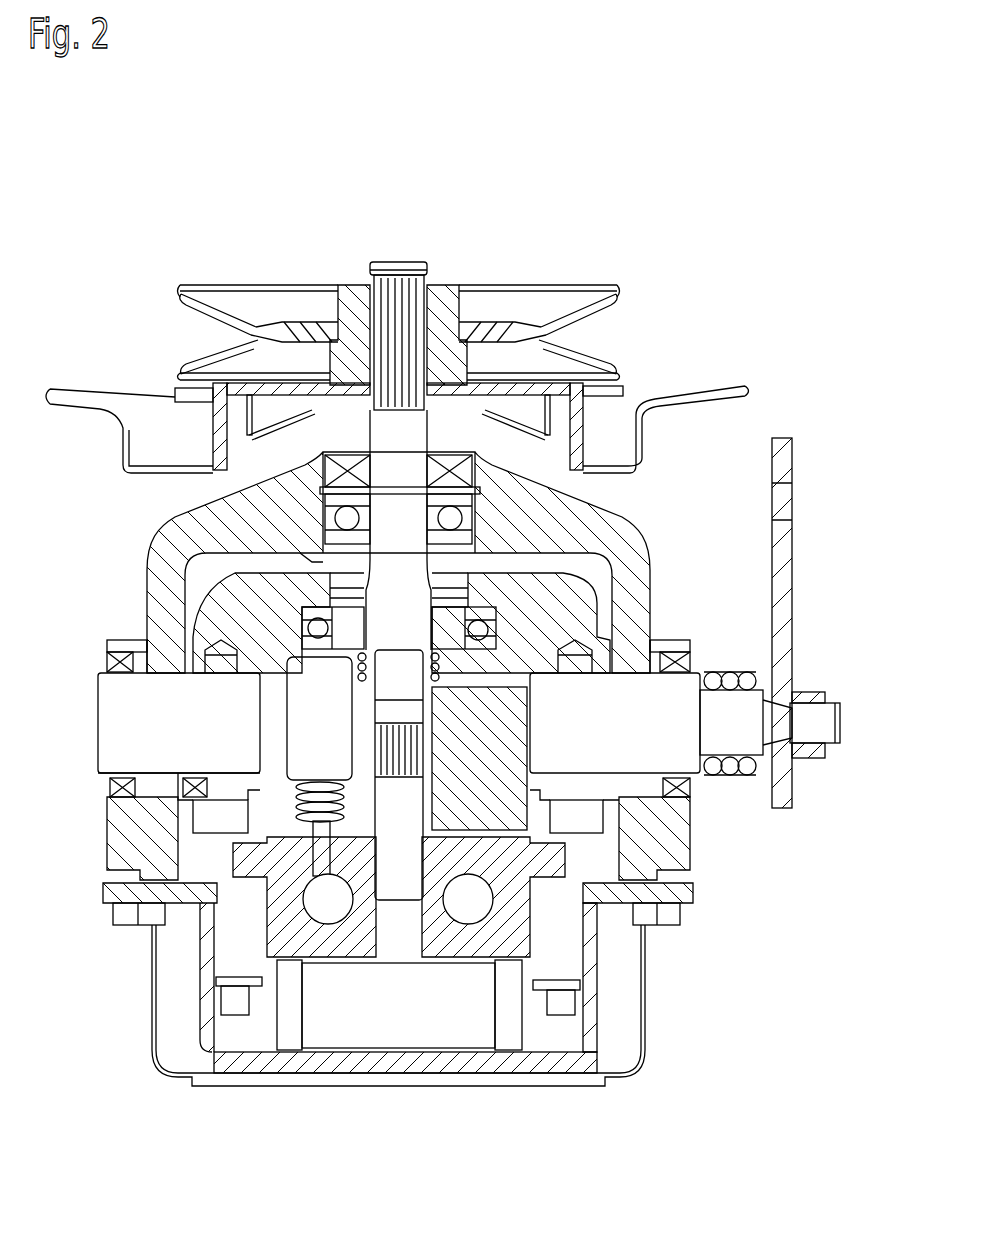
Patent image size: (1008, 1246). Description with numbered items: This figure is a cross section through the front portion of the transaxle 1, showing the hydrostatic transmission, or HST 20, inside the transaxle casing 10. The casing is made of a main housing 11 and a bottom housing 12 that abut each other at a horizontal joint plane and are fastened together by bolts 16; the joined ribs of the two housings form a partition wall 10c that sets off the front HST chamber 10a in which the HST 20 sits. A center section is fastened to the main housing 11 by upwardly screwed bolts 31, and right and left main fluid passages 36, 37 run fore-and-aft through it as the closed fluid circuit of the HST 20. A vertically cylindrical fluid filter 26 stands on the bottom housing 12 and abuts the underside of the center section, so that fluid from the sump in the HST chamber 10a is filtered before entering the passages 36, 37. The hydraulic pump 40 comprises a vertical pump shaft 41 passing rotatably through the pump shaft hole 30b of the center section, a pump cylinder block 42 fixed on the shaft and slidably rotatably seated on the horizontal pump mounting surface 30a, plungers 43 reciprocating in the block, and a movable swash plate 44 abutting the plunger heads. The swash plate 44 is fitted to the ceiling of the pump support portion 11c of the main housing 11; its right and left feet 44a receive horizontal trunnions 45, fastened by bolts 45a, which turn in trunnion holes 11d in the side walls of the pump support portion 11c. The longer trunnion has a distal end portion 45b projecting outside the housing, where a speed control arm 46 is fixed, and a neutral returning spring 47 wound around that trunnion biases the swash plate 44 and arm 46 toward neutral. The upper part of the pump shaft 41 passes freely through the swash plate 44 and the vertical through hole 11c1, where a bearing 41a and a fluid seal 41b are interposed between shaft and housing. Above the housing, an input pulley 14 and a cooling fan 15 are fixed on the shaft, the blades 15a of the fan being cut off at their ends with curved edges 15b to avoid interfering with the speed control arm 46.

The transaxle 1 is at (236, 202).
The transaxle casing 10 is at (778, 912).
The HST chamber 10a is at (605, 560).
The partition wall 10c is at (275, 1015).
The main housing 11 is at (690, 868).
The pump support portion 11c is at (565, 523).
The vertical through hole 11c1 is at (300, 546).
The trunnion holes 11d is at (107, 650).
The bottom housing 12 is at (690, 895).
The input pulley 14 is at (578, 290).
The cooling fan 15 is at (766, 379).
The blades 15a is at (667, 382).
The curved edges 15b is at (112, 415).
The bolts 16 is at (130, 926).
The HST 20 is at (262, 1062).
The fluid filter 26 is at (399, 1005).
The pump mounting surface 30a is at (186, 773).
The vertical pump shaft hole 30b is at (399, 897).
The bolts 31 is at (398, 1014).
The right main fluid passage 36 is at (328, 899).
The left main fluid passage 37 is at (468, 899).
The hydraulic pump 40 is at (606, 607).
The pump shaft 41 is at (398, 581).
The bearing 41a is at (325, 500).
The fluid seal 41b is at (340, 452).
The pump cylinder block 42 is at (262, 702).
The plungers 43 is at (319, 766).
The movable swash plate 44 is at (290, 622).
The feet 44a is at (180, 789).
The trunnions 45 is at (399, 723).
The bolts 45a is at (225, 833).
The distal end portion 45b is at (770, 724).
The speed control arm 46 is at (795, 603).
The neutral returning spring 47 is at (726, 672).